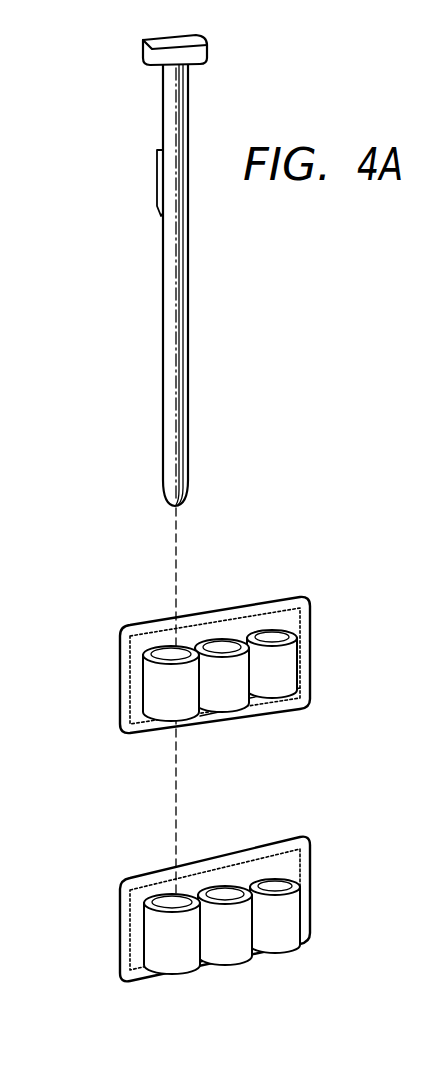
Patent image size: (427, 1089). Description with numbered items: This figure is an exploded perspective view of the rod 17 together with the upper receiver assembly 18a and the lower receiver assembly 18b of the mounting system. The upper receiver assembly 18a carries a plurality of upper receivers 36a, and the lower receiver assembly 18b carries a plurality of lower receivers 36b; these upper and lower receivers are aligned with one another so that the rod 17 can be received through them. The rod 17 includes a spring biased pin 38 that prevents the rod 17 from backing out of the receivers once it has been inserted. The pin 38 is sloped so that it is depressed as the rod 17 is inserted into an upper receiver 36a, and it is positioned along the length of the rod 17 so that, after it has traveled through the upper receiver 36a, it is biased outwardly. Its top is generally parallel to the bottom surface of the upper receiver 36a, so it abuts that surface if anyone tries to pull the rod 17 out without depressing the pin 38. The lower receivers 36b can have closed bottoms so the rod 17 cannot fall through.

The rod 17 is at (170, 258).
The spring biased pin 38 is at (163, 181).
The upper receiver assembly 18a is at (253, 612).
The upper receiver 36a is at (236, 678).
The lower receiver assembly 18b is at (140, 961).
The lower receiver 36b is at (290, 928).